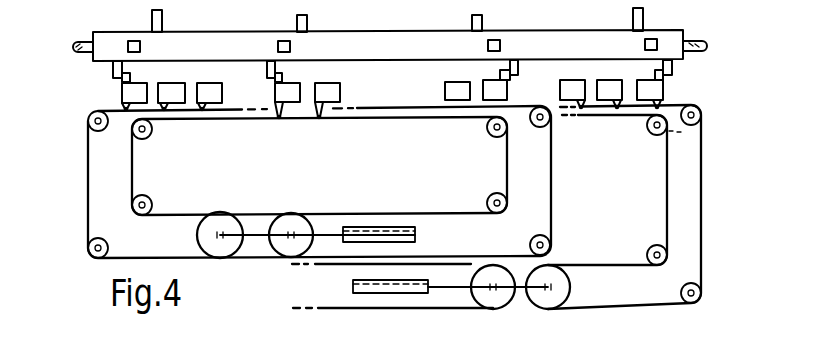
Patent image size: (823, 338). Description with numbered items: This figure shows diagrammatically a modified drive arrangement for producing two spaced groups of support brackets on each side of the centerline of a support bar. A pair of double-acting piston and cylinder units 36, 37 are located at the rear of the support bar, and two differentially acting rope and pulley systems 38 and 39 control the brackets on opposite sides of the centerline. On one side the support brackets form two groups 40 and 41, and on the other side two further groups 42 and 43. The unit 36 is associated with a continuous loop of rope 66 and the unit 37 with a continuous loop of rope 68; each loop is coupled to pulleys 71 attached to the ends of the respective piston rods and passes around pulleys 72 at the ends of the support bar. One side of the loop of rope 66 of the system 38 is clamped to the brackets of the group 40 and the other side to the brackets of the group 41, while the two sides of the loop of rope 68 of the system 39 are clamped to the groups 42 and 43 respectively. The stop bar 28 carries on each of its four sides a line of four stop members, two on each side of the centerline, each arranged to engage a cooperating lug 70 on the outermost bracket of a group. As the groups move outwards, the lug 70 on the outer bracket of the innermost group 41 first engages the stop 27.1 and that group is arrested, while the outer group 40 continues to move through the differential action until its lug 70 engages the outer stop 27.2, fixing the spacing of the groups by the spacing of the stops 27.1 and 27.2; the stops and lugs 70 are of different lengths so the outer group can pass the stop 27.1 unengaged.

The stop bar 28 is at (396, 32).
The outer stop 27.2 is at (113, 72).
The stop 27.1 is at (267, 69).
The stop engaging lug 70 is at (274, 79).
The group of support brackets 40 is at (201, 84).
The group of support brackets 41 is at (328, 83).
The group of support brackets 42 is at (458, 83).
The group of support brackets 43 is at (607, 81).
The rope and pulley system 38 is at (76, 181).
The pulley 72 is at (132, 134).
The loop of rope 66 is at (131, 176).
The pulley 71 is at (229, 251).
The double-acting piston and cylinder unit 36 is at (415, 235).
The double-acting piston and cylinder unit 37 is at (420, 286).
The loop of rope 68 is at (614, 190).
The rope and pulley system 39 is at (653, 207).